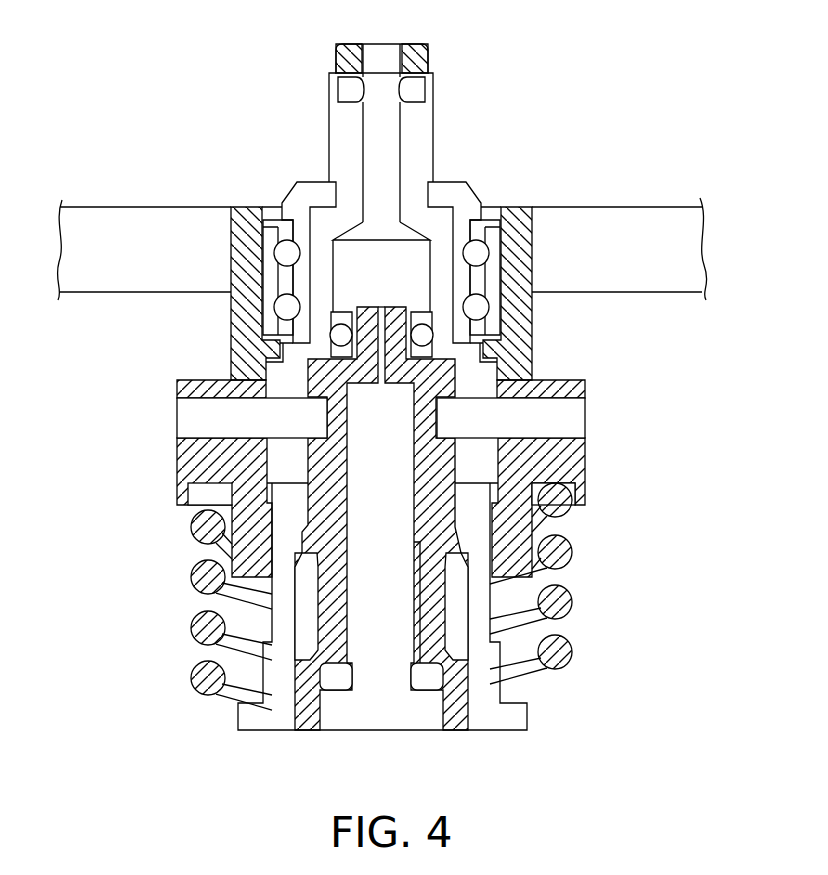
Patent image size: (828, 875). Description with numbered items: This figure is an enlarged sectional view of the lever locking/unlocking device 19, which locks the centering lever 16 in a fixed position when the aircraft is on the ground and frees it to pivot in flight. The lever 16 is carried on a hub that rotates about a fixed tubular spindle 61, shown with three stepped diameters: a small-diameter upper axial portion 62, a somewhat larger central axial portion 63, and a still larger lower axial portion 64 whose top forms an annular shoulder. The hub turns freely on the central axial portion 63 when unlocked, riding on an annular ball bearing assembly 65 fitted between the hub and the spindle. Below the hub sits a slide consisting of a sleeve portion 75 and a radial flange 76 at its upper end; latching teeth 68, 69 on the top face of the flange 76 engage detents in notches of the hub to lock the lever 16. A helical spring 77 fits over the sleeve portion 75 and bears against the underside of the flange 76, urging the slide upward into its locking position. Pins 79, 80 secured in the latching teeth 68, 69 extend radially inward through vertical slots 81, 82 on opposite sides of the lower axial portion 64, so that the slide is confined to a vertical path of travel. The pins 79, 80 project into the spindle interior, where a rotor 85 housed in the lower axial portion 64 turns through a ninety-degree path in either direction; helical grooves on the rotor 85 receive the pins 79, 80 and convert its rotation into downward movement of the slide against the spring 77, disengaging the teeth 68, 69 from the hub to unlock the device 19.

The centering lever 16 is at (648, 206).
The lever locking/unlocking device 19 is at (596, 59).
The fixed tubular spindle 61 is at (262, 605).
The upper axial portion 62 is at (428, 130).
The central axial portion 63 is at (453, 262).
The lower axial portion 64 is at (492, 640).
The annular ball bearing assembly 65 is at (487, 293).
The latching tooth 68 is at (193, 379).
The latching tooth 69 is at (230, 243).
The sleeve portion 75 is at (545, 523).
The radial flange 76 is at (177, 487).
The helical spring 77 is at (573, 560).
The pin 79 is at (187, 416).
The pin 80 is at (576, 419).
The vertical slot 81 is at (280, 467).
The vertical slot 82 is at (483, 462).
The rotor 85 is at (456, 610).